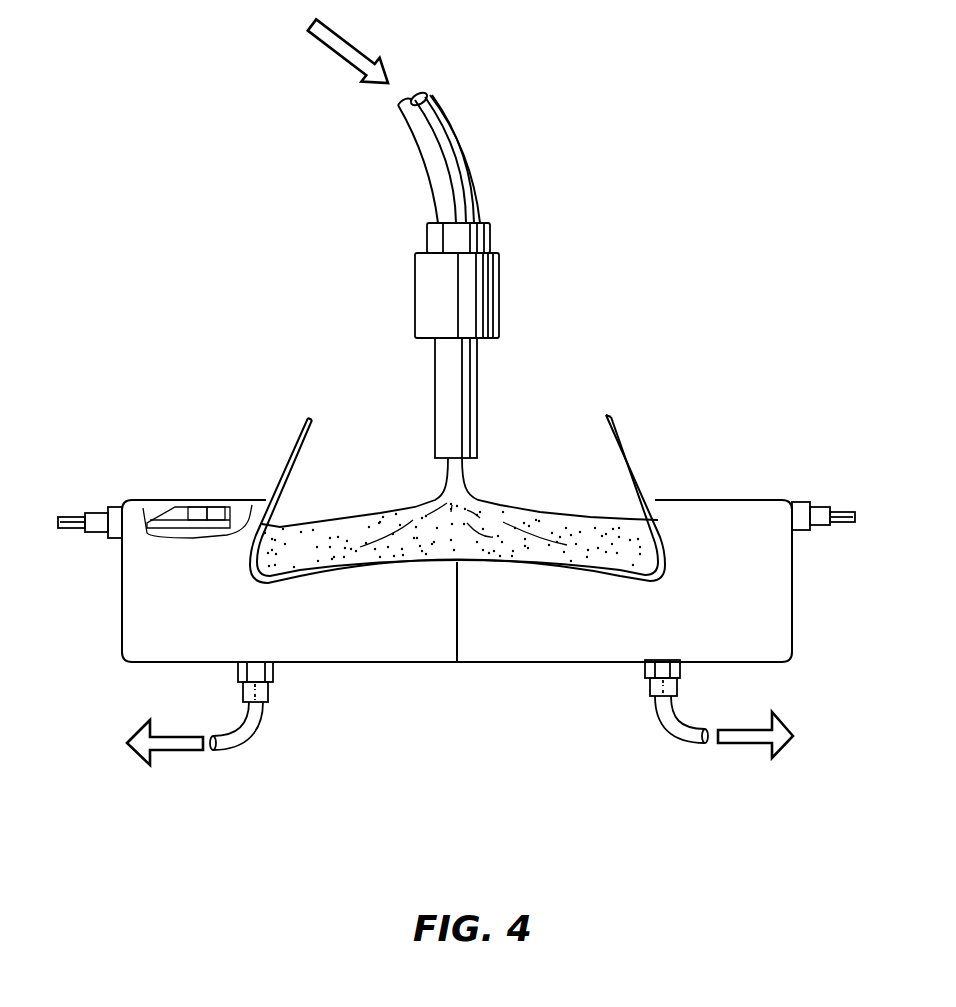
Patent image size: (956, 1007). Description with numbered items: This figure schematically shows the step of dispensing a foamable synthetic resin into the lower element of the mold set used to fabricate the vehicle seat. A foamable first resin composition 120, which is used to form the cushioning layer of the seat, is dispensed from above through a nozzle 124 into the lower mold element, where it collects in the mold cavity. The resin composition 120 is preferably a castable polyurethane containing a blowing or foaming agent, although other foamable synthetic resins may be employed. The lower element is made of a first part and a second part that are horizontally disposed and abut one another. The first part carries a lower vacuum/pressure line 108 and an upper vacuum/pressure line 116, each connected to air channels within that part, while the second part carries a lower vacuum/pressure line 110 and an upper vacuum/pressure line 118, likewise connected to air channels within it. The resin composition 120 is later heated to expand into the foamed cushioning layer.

The lower vacuum/pressure line 108 is at (258, 729).
The lower vacuum/pressure line 110 is at (661, 733).
The upper vacuum/pressure line 116 is at (72, 517).
The upper vacuum/pressure line 118 is at (840, 510).
The foamable first resin composition 120 is at (605, 547).
The nozzle 124 is at (435, 383).